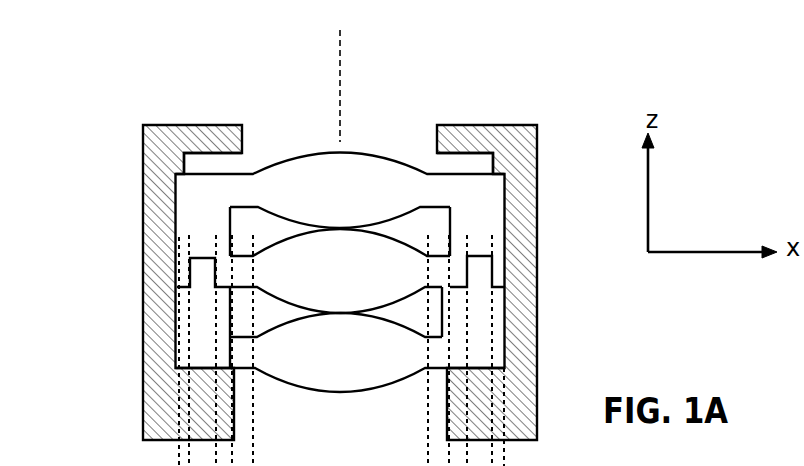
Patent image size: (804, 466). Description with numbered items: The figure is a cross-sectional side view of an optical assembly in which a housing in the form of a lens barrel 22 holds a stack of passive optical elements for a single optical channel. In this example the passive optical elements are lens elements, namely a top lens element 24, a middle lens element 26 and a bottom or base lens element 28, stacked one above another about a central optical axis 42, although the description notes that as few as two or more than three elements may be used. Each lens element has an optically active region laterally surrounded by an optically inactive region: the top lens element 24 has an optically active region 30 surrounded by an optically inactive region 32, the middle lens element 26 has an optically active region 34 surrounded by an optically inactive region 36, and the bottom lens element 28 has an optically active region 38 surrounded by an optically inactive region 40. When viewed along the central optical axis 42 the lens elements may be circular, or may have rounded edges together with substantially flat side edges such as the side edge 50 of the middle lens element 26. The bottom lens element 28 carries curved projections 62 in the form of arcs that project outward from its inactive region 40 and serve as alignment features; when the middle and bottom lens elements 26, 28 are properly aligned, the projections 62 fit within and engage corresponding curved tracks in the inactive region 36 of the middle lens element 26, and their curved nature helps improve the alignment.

The lens barrel 22 is at (143, 177).
The top lens element 24 is at (355, 162).
The middle lens element 26 is at (408, 267).
The bottom lens element 28 is at (368, 382).
The optically active region 30 is at (340, 154).
The optically inactive region 32 is at (212, 182).
The optically active region 34 is at (409, 234).
The optically inactive region 36 is at (190, 220).
The optically active region 38 is at (340, 370).
The optically inactive region 40 is at (203, 335).
The central optical axis 42 is at (340, 80).
The side edge 50 is at (341, 350).
The curved projection 62 is at (197, 277).